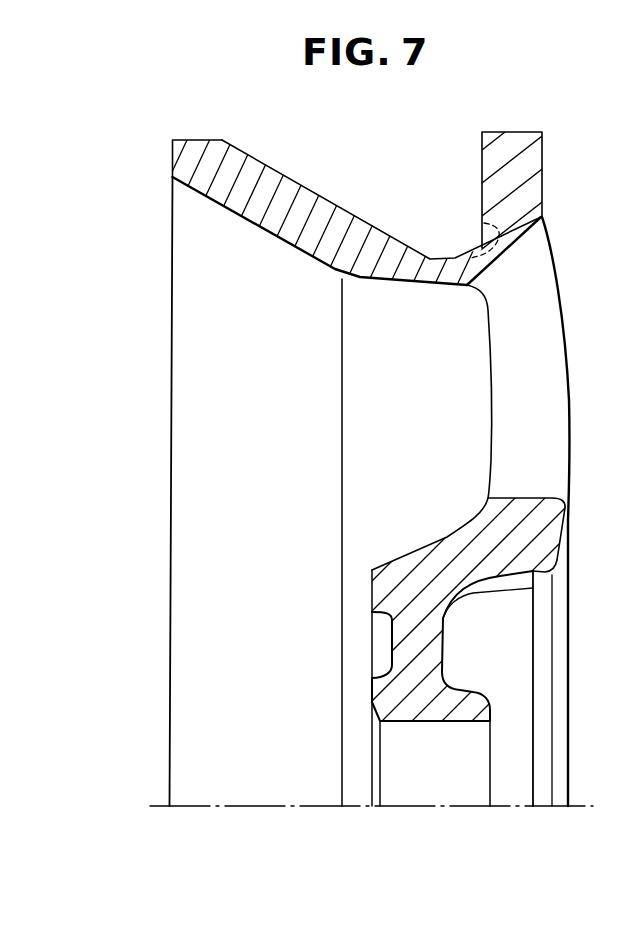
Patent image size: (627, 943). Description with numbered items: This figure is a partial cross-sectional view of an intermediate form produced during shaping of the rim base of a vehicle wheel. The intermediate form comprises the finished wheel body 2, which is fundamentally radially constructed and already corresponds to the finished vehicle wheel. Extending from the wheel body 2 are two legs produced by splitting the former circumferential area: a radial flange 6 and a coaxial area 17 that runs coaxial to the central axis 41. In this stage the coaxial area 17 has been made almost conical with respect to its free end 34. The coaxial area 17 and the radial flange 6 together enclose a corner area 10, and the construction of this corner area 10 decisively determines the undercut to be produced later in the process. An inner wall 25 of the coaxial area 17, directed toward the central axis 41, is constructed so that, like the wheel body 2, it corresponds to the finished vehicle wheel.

The wheel body 2 is at (542, 537).
The radial flange 6 is at (527, 152).
The corner area 10 is at (465, 250).
The coaxial area 17 is at (308, 207).
The inner wall 25 is at (395, 283).
The free end 34 is at (196, 147).
The central axis 41 is at (297, 808).